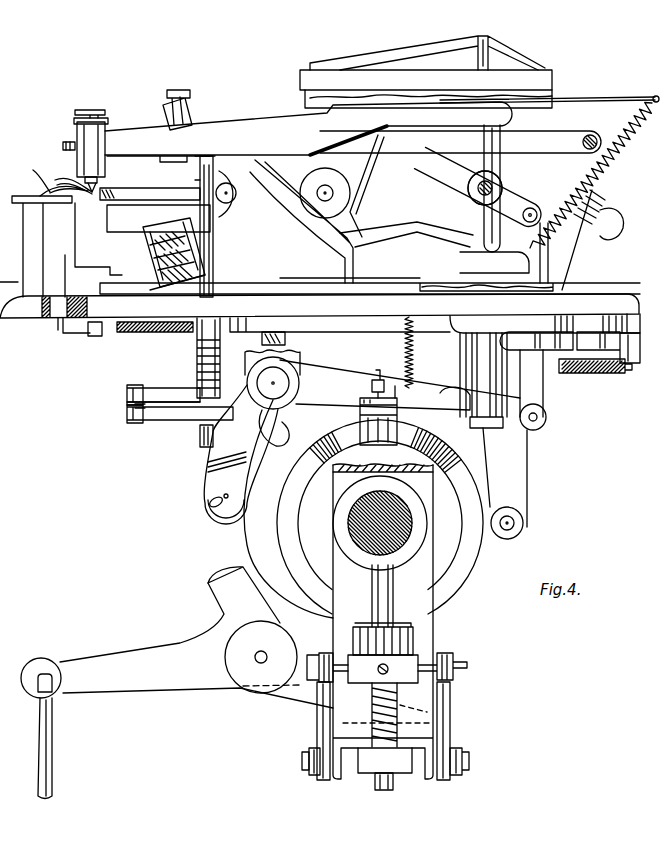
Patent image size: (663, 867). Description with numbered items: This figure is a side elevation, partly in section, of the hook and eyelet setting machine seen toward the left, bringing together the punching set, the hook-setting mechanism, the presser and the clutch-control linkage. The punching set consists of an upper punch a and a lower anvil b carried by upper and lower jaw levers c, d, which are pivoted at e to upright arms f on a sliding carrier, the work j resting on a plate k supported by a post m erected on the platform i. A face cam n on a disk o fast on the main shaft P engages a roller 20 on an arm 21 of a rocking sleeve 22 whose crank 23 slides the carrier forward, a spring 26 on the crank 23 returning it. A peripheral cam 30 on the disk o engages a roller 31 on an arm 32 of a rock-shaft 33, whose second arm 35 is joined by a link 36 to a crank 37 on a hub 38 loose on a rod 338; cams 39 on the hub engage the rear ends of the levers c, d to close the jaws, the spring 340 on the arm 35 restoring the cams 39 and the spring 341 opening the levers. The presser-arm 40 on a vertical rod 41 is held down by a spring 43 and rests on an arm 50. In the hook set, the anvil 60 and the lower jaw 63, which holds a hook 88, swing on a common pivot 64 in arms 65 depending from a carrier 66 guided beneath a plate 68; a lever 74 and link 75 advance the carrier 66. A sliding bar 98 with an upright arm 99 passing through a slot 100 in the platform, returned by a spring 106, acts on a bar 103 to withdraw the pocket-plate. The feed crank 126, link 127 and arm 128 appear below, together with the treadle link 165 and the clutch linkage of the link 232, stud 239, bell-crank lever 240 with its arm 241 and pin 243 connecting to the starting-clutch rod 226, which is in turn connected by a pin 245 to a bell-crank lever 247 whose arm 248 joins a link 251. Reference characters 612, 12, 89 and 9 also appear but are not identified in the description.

The plate 68 is at (310, 80).
The carrier 66 is at (310, 98).
The link 75 is at (378, 144).
The spring 341 is at (607, 140).
The spring end 612 is at (604, 196).
The cams or arms 39 is at (497, 143).
The rod 338 is at (468, 183).
The hub or sleeve 38 is at (468, 192).
The crank 37 is at (478, 186).
The link 36 is at (541, 247).
The lever 74 is at (568, 218).
The common pivot 64 is at (332, 195).
The arms 65 is at (358, 168).
The vertical rod 41 is at (222, 210).
The upper tool or anvil 60 is at (163, 166).
The crank or arm 40 is at (152, 191).
The post 12 is at (170, 205).
The hook or stud 88 is at (173, 217).
The bar 103 is at (150, 257).
The lower jaw or lever 63 is at (178, 288).
The upright arm 99 is at (67, 273).
The post 89 is at (12, 240).
The bed plate 9 is at (282, 282).
The slot 100 is at (52, 326).
The sliding bar 98 is at (108, 335).
The spring 106 is at (145, 332).
The spring 43 is at (196, 350).
The crank 126 is at (162, 394).
The link 127 is at (127, 400).
The arm 128 is at (140, 420).
The second crank or arm 50 is at (200, 438).
The rock-shaft 33 is at (281, 384).
The second crank or arm 35 is at (357, 393).
The spring 340 is at (405, 357).
The arm 21 is at (410, 406).
The roller 20 is at (353, 412).
The rocking sleeve or hub 22 is at (462, 352).
The second arm or crank 23 is at (527, 352).
The spring 26 is at (595, 374).
The crank or arm 32 is at (213, 455).
The roller 31 is at (205, 506).
The peripheral cam 30 is at (262, 520).
The pin 243 is at (333, 660).
The second bell-crank lever 247 is at (440, 655).
The starting-clutch rod 226 is at (385, 700).
The arm 241 is at (323, 672).
The pin 245 is at (478, 660).
The arm 248 is at (451, 715).
The bell-crank lever 240 is at (318, 728).
The link 251 is at (462, 752).
The link or bar 232 is at (308, 773).
The stud or pin 239 is at (302, 762).
The link 165 is at (53, 758).
The upper jaw or lever c is at (128, 130).
The pivot e is at (227, 184).
The upright arms f is at (297, 193).
The work-support or plate k is at (28, 190).
The shoe-upper or work j is at (39, 169).
The upper tool or punch a is at (88, 190).
The lower tool or anvil b is at (85, 200).
The lower jaw or lever d is at (102, 281).
The post m is at (9, 283).
The top plate or platform i is at (319, 306).
The face cam n is at (358, 428).
The disk o is at (462, 568).
The main shaft P is at (348, 523).